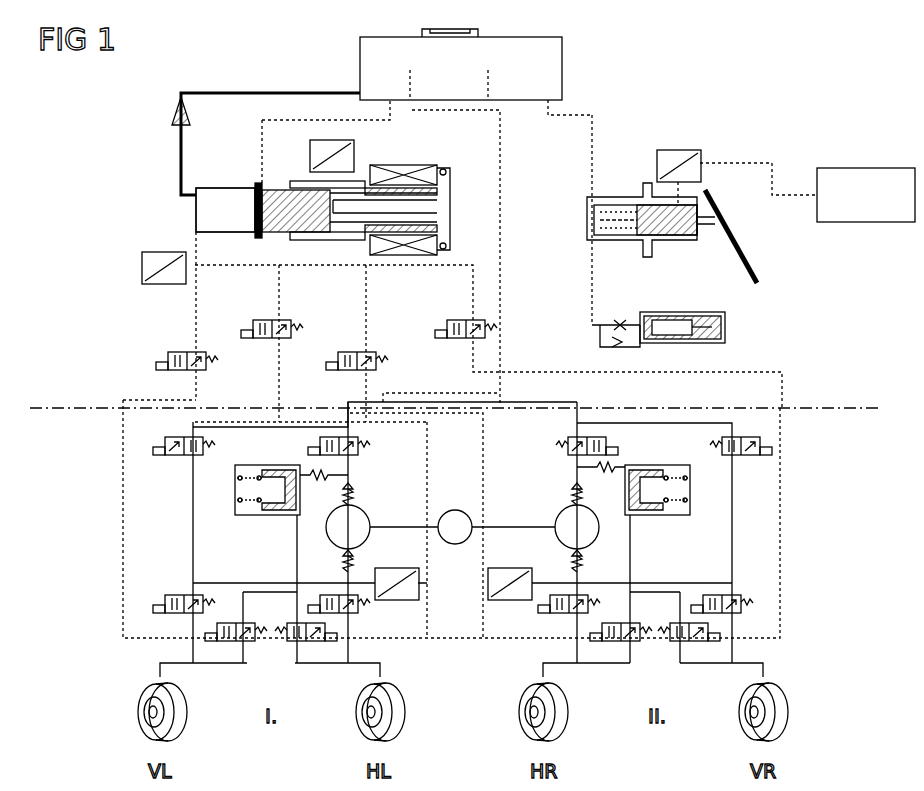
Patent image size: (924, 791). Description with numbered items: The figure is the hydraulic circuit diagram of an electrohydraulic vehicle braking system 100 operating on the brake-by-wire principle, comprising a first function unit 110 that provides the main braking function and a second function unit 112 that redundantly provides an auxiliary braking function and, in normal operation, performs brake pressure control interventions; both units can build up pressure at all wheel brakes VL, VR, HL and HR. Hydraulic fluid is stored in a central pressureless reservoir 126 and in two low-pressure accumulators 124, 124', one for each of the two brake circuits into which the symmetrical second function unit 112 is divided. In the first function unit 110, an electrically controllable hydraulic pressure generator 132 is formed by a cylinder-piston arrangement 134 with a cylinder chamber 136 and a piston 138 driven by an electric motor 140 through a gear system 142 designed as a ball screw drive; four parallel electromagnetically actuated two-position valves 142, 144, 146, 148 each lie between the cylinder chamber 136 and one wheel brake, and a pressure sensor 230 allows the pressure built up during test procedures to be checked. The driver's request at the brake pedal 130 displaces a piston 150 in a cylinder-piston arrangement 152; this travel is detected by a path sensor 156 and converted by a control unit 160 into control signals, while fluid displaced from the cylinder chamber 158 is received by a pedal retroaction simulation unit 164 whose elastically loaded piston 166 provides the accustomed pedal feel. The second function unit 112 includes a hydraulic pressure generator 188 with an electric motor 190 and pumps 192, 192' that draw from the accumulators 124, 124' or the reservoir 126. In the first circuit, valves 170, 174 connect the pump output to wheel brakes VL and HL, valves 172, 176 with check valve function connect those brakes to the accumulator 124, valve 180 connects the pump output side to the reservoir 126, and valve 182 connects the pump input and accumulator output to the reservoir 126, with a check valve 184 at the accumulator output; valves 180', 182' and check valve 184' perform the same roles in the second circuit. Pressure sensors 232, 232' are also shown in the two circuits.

The electrohydraulic vehicle braking system 100 is at (148, 140).
The first function unit 110 is at (82, 390).
The second function unit 112 is at (82, 449).
The low-pressure accumulator 124 is at (283, 447).
The low-pressure accumulator 124' is at (645, 517).
The central pressureless reservoir 126 is at (565, 64).
The brake pedal 130 is at (746, 239).
The hydraulic pressure generator 132 is at (236, 158).
The cylinder-piston arrangement 134 is at (195, 207).
The cylinder chamber 136 is at (226, 192).
The piston 138 is at (298, 190).
The electric motor 140 is at (360, 236).
The gear system / valve 142 is at (452, 204).
The valve 144 is at (256, 319).
The valve 146 is at (348, 350).
The valve 148 is at (451, 320).
The piston 150 is at (676, 243).
The cylinder-piston arrangement 152 is at (618, 256).
The path sensor 156 is at (678, 148).
The cylinder chamber 158 is at (628, 206).
The control unit 160 is at (864, 168).
The pedal retroaction simulation unit 164 is at (713, 314).
The piston 166 is at (666, 344).
The valve 170 is at (175, 594).
The valve 172 is at (242, 644).
The valve 174 is at (320, 592).
The valve 176 is at (310, 644).
The valve 180 is at (180, 475).
The valve 180' is at (746, 475).
The valve 182 is at (301, 402).
The valve 182' is at (554, 440).
The check valve 184 is at (311, 448).
The check valve 184' is at (644, 448).
The hydraulic pressure generator 188 is at (455, 495).
The electric motor 190 is at (458, 548).
The pump 192 is at (368, 524).
The pump 192' is at (553, 524).
The pressure sensor 230 is at (140, 266).
The pressure sensor 232 is at (404, 622).
The pressure sensor (second circuit) 232' is at (501, 622).